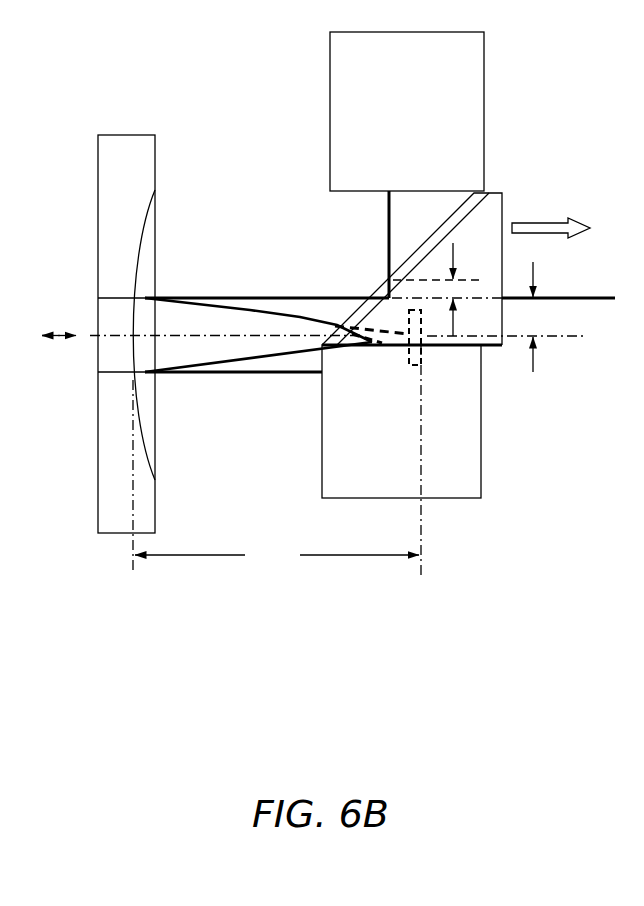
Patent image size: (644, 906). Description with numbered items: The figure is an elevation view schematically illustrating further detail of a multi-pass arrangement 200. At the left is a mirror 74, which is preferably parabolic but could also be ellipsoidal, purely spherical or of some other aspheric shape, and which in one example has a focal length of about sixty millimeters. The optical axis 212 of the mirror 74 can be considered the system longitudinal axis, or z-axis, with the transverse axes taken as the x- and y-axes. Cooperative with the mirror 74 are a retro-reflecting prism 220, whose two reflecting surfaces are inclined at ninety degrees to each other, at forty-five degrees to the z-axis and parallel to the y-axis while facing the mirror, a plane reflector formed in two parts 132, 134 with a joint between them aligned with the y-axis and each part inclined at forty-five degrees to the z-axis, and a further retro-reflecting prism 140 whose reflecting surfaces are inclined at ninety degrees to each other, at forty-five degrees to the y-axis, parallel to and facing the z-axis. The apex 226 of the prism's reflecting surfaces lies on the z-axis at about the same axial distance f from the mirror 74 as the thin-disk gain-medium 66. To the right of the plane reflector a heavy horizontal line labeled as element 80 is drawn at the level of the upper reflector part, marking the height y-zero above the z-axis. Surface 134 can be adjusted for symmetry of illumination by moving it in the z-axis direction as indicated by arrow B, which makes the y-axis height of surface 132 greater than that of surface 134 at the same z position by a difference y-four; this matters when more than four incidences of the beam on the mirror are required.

The retro-reflecting prism 140 is at (326, 100).
The plane reflector part 134 is at (428, 258).
The plane reflector part 132 is at (376, 291).
The optical axis 212 is at (258, 326).
The mirror 74 is at (147, 413).
The thin-disk gain-medium 66 is at (424, 359).
The retro-reflecting prism 220 is at (486, 447).
The apex 226 is at (422, 456).
The output beam 80 is at (559, 347).
The multi-pass arrangement 200 is at (329, 375).